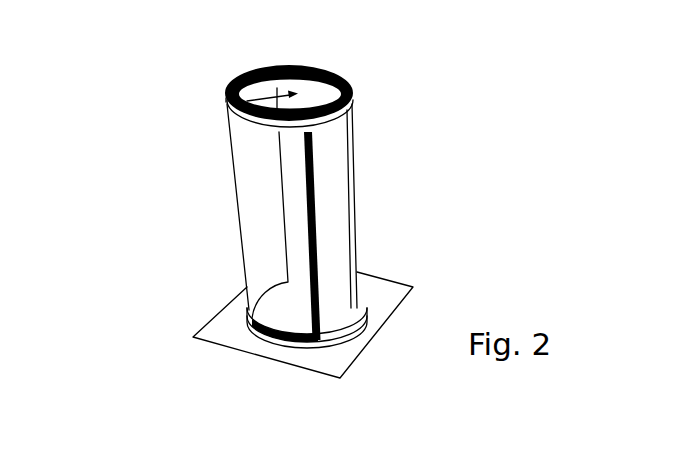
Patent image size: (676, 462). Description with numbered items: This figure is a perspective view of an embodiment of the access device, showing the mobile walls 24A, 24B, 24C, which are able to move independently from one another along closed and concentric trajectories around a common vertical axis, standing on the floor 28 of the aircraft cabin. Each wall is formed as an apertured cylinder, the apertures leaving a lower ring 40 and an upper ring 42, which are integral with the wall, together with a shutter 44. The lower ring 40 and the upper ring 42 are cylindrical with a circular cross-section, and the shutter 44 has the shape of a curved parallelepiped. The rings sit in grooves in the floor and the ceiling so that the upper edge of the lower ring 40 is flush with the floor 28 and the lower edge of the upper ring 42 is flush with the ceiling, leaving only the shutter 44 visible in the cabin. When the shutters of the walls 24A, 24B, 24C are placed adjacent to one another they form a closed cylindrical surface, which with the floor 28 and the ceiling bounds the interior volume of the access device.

The mobile wall 24A is at (330, 225).
The mobile wall 24B is at (245, 208).
The mobile wall 24C is at (225, 108).
The floor 28 is at (412, 289).
The lower ring 40 is at (253, 330).
The upper ring 42 is at (353, 108).
The shutter 44 is at (327, 187).